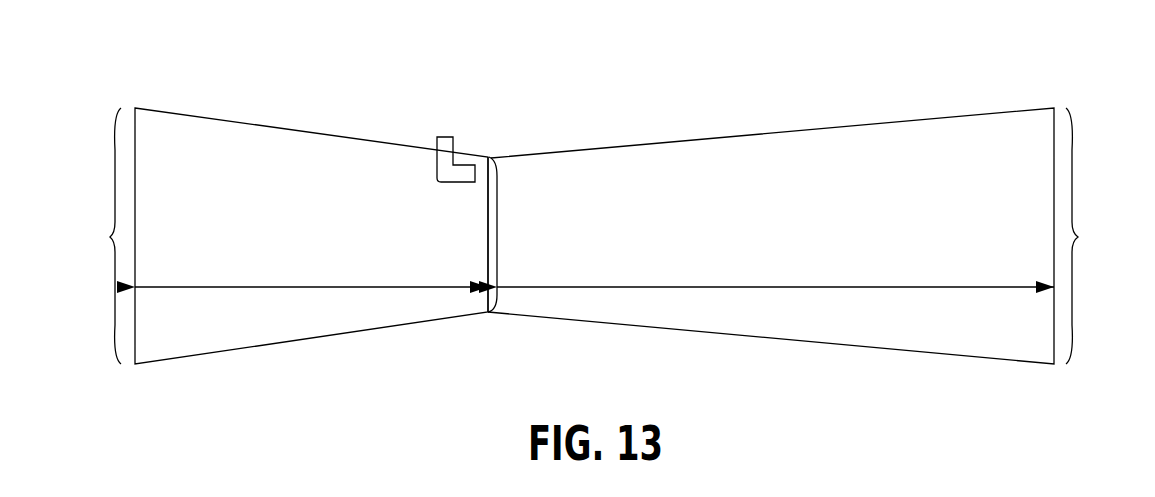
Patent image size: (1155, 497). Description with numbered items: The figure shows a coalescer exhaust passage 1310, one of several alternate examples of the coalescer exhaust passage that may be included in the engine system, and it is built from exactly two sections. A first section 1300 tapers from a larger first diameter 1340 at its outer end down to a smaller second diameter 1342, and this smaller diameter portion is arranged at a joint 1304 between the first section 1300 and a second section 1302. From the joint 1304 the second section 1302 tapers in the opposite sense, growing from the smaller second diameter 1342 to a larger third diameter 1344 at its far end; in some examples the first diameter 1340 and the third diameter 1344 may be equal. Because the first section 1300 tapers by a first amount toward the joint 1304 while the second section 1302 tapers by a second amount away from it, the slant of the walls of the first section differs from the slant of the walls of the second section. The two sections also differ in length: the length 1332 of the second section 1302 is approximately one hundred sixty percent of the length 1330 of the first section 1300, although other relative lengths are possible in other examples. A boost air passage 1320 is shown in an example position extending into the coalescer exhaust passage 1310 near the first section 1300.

The first section 1300 is at (333, 246).
The second section 1302 is at (793, 246).
The joint 1304 is at (488, 265).
The coalescer exhaust passage 1310 is at (488, 92).
The boost air passage 1320 is at (438, 152).
The length of the first section 1330 is at (210, 287).
The length of the second section 1332 is at (885, 287).
The first diameter 1340 is at (110, 237).
The second diameter 1342 is at (498, 238).
The third diameter 1344 is at (1078, 237).